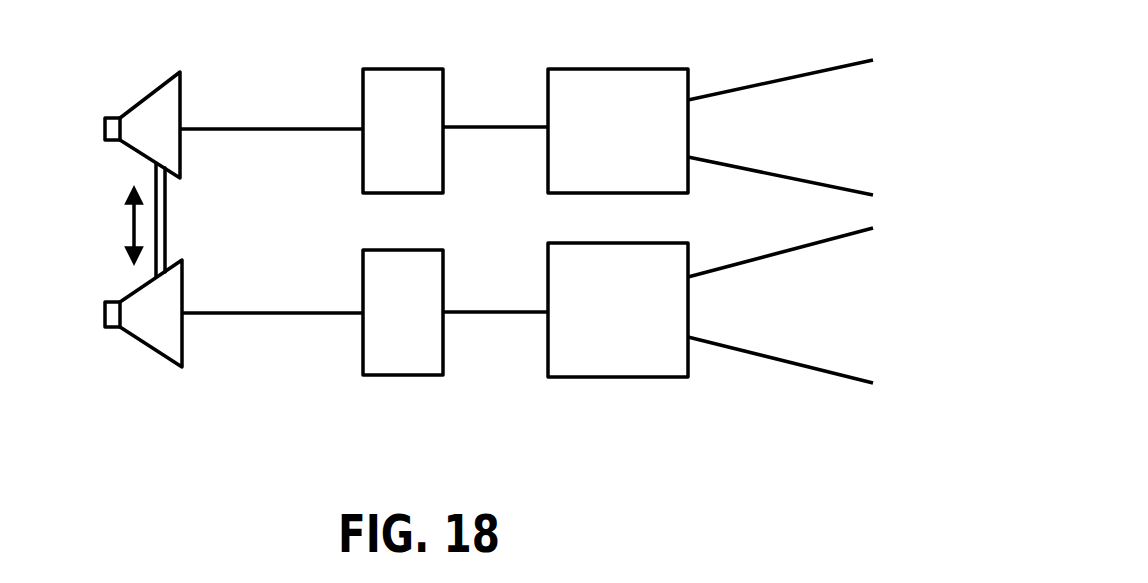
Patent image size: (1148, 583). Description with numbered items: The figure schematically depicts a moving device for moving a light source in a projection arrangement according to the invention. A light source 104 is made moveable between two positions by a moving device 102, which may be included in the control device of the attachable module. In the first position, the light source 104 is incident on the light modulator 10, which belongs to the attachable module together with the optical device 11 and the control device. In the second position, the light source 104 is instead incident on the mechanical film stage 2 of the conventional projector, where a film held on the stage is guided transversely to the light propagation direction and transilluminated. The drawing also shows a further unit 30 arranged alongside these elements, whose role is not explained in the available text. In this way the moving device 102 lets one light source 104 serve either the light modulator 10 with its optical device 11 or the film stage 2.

The light source 104 is at (105, 128).
The moving device 102 is at (165, 216).
The mechanical film stage 2 is at (380, 69).
The processing unit 30 is at (590, 69).
The light modulator 10 is at (402, 375).
The optical device 11 is at (613, 378).